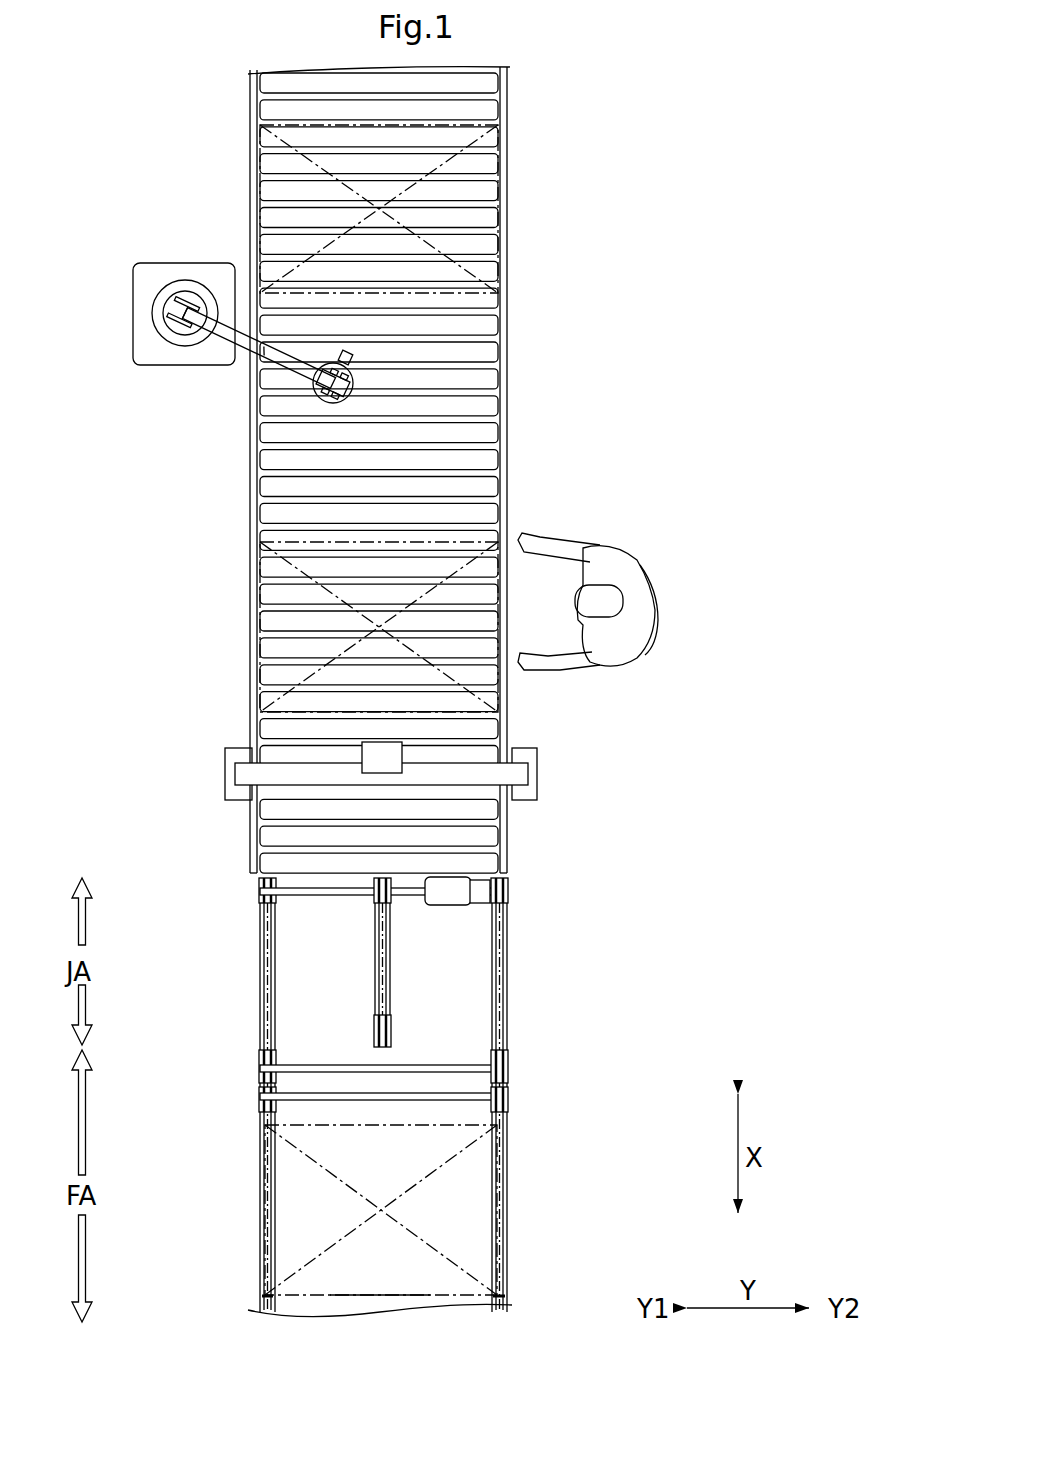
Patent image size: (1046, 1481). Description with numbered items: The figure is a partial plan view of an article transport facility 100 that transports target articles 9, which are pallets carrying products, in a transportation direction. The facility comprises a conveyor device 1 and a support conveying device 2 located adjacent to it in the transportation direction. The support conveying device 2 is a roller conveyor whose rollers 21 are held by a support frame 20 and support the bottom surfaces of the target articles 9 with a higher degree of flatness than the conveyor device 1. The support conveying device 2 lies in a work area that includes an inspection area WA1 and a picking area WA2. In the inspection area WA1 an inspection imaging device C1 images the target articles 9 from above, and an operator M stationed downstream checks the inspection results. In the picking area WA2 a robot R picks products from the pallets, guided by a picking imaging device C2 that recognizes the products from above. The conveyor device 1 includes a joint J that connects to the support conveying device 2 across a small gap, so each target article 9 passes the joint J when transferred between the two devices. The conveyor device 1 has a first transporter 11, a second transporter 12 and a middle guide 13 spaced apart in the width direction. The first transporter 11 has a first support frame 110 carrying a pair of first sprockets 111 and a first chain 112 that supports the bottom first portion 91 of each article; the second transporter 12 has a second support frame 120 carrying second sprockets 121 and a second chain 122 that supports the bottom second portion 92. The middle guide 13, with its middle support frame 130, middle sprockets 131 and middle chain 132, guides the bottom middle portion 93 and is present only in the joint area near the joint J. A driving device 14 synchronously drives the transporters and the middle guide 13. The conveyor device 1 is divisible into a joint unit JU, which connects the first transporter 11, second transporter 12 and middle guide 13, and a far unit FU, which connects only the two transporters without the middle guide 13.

The conveyor device 1 is at (456, 1083).
The support conveying device 2 is at (437, 470).
The target article 9 is at (455, 125).
The first transporter 11 is at (198, 1095).
The second transporter 12 is at (452, 1080).
The middle guide 13 is at (390, 969).
The driving device 14 is at (455, 910).
The support frame 20 is at (507, 460).
The rollers 21 is at (503, 372).
The bottom first portion 91 is at (280, 1300).
The bottom second portion 92 is at (488, 1300).
The bottom middle portion 93 is at (375, 1272).
The article transport facility 100 is at (605, 190).
The first support frame 110 is at (258, 985).
The first sprockets 111 is at (258, 880).
The first chain 112 is at (258, 1010).
The second support frame 120 is at (507, 983).
The second sprockets 121 is at (505, 885).
The second chain 122 is at (507, 1015).
The middle support frame 130 is at (375, 930).
The middle sprockets 131 is at (375, 890).
The middle chain 132 is at (380, 978).
The inspection imaging device C1 is at (375, 755).
The picking imaging device C2 is at (352, 354).
The robot R is at (324, 284).
The operator M is at (637, 553).
The joint J is at (240, 866).
The joint unit JU is at (557, 927).
The far unit FU is at (528, 1148).
The inspection area WA1 is at (615, 718).
The picking area WA2 is at (222, 405).